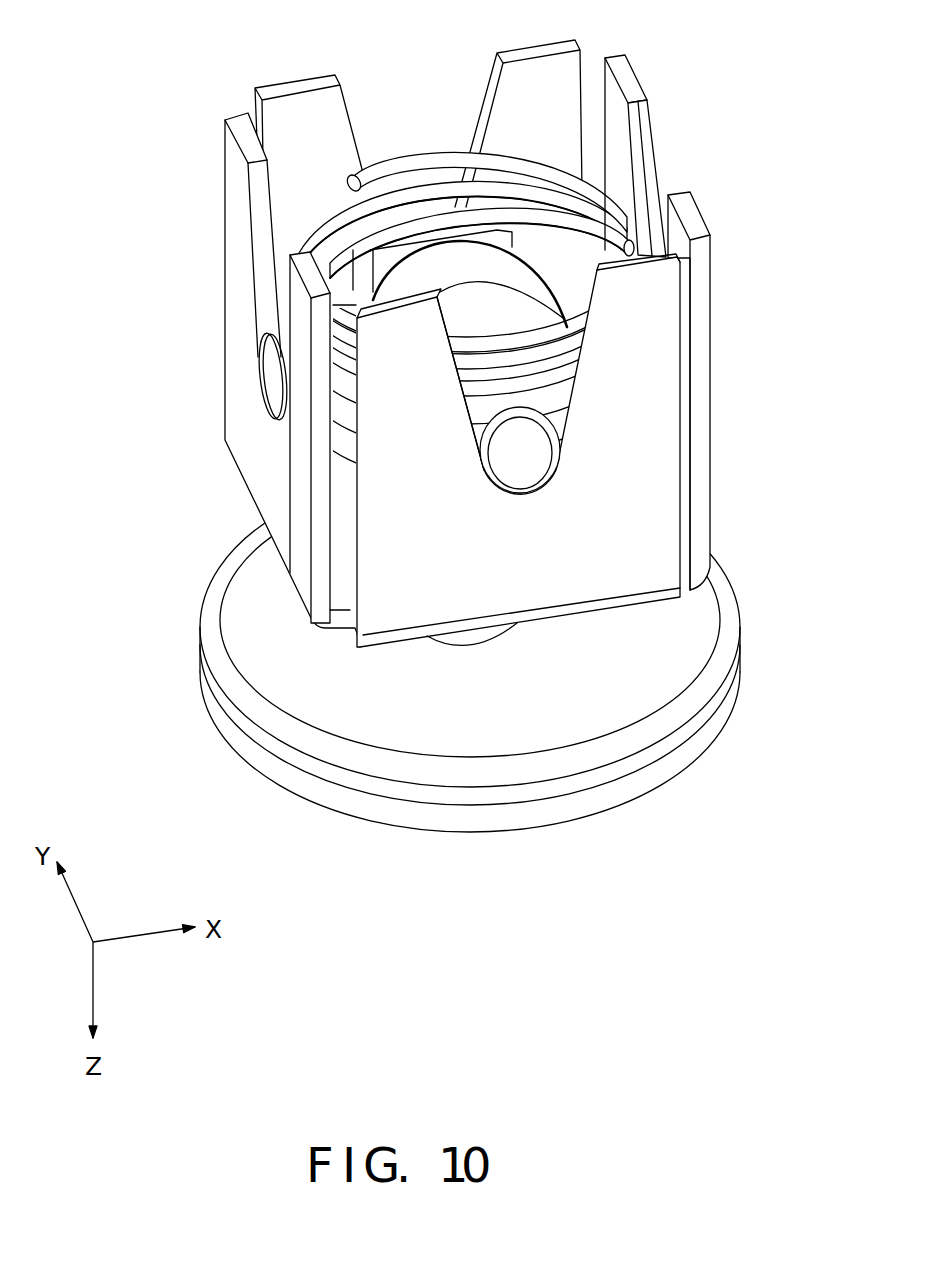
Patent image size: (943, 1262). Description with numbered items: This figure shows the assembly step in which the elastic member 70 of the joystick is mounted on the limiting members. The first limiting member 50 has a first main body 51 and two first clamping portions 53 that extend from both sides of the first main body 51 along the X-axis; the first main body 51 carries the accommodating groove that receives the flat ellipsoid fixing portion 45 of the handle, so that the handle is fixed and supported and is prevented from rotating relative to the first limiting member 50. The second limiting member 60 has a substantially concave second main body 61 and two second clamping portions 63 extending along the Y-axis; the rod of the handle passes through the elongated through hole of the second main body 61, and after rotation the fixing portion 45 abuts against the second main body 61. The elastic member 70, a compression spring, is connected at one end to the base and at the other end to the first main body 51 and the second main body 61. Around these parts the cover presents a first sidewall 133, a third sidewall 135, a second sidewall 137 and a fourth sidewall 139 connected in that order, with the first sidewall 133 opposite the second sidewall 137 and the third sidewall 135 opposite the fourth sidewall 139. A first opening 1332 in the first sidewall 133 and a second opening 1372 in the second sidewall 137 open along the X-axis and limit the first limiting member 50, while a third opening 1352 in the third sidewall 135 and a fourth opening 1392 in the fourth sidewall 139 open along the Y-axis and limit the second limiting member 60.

The fixing portion 45 is at (657, 670).
The first limiting member 50 is at (330, 325).
The first main body 51 is at (267, 367).
The first clamping portions 53 is at (347, 302).
The second limiting member 60 is at (651, 426).
The second main body 61 is at (580, 387).
The second clamping portions 63 is at (560, 430).
The elastic member 70 is at (632, 240).
The first sidewall 133 is at (615, 112).
The third sidewall 135 is at (650, 483).
The second sidewall 137 is at (238, 205).
The fourth sidewall 139 is at (533, 78).
The first opening 1332 is at (665, 177).
The third opening 1352 is at (493, 403).
The second opening 1372 is at (263, 258).
The fourth opening 1392 is at (380, 92).